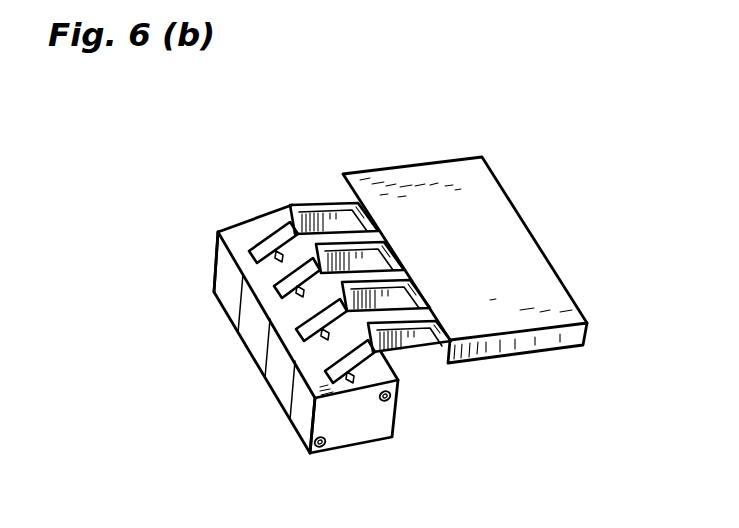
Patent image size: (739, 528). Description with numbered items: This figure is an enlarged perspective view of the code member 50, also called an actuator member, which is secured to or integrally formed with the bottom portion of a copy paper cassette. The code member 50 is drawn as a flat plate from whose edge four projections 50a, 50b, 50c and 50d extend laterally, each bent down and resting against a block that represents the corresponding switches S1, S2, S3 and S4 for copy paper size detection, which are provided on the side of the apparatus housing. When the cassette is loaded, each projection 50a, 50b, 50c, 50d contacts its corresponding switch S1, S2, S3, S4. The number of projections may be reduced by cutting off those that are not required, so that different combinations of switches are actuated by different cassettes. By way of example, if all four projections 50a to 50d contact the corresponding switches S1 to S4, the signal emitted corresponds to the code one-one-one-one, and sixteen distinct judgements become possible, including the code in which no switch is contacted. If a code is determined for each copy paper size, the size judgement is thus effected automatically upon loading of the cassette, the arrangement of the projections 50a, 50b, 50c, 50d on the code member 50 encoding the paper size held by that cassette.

The code member 50 is at (516, 255).
The projection 50a is at (292, 207).
The projection 50b is at (343, 243).
The projection 50c is at (367, 278).
The projection 50d is at (398, 323).
The switch S1 is at (219, 297).
The switch S2 is at (251, 337).
The switch S3 is at (273, 381).
The switch S4 is at (301, 421).